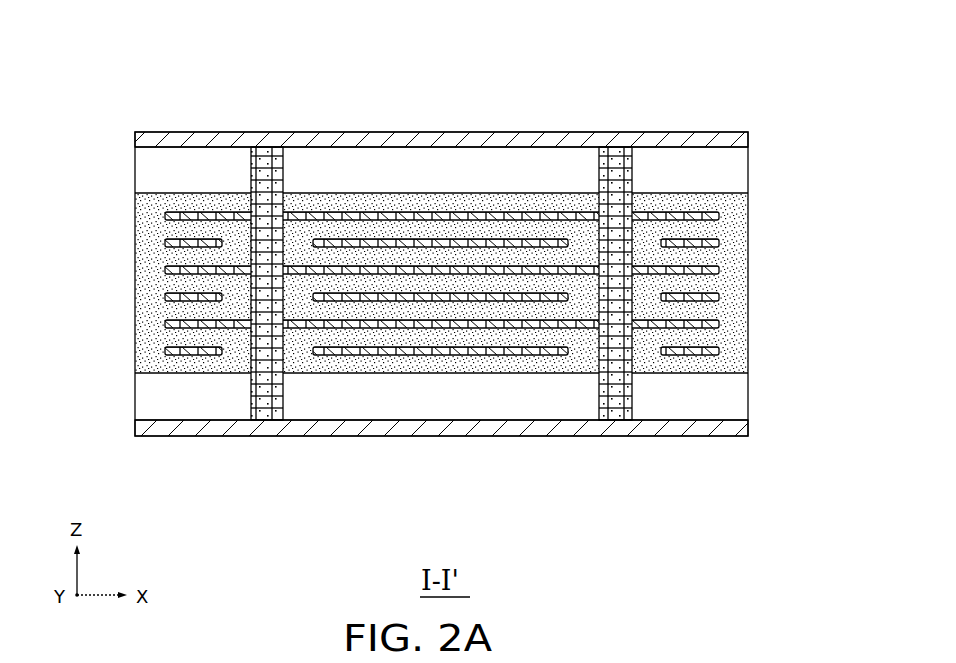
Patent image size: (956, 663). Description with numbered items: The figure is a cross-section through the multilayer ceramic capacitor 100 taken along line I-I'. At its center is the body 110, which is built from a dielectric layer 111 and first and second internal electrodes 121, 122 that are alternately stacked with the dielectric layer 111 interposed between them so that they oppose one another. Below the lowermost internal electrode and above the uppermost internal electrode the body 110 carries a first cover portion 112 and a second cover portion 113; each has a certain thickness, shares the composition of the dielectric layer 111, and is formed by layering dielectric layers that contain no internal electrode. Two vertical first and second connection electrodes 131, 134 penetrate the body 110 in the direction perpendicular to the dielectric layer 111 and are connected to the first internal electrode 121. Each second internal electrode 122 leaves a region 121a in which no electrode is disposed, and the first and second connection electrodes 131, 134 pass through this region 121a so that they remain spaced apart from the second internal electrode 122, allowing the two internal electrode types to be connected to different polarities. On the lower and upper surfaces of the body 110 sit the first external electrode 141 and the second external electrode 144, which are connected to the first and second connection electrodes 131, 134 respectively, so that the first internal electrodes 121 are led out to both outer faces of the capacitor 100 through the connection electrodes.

The multilayer ceramic capacitor 100 is at (444, 260).
The body 110 is at (444, 299).
The dielectric layer 111 is at (712, 310).
The first cover portion 112 is at (744, 390).
The second cover portion 113 is at (747, 168).
The first internal electrode 121 is at (165, 325).
The region in which an electrode is not disposed 121a is at (238, 352).
The second internal electrode 122 is at (722, 352).
The first connection electrode 131 is at (268, 160).
The second connection electrode 134 is at (614, 150).
The first external electrode 141 is at (140, 428).
The second external electrode 144 is at (135, 138).